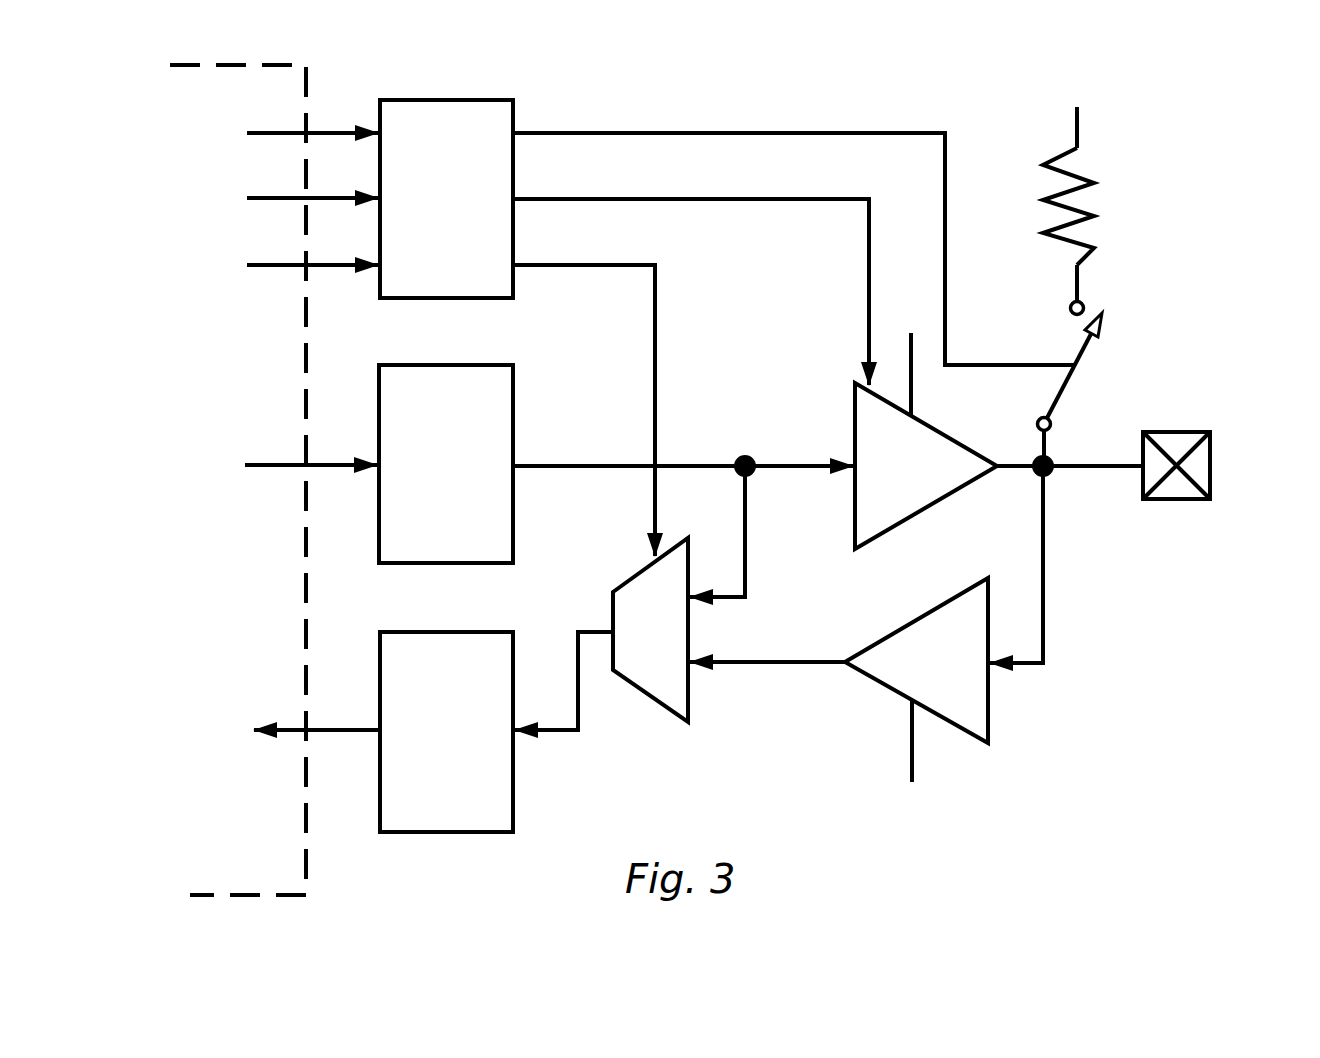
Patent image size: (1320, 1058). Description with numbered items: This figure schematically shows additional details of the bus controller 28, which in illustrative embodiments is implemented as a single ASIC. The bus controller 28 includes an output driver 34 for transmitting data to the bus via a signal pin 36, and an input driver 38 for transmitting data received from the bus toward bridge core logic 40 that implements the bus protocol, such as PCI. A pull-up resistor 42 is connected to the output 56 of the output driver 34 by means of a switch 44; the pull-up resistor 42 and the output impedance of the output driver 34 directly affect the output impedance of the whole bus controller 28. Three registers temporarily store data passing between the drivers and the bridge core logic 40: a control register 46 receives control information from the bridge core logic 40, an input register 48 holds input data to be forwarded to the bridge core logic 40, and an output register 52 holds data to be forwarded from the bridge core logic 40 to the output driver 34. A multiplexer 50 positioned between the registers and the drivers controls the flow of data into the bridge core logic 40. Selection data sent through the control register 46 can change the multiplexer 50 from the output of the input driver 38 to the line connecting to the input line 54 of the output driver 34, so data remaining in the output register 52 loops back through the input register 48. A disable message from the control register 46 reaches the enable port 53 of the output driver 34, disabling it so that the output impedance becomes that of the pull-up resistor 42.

The bus controller 28 is at (1002, 102).
The output driver 34 is at (960, 485).
The signal pin 36 is at (1165, 500).
The input driver 38 is at (932, 608).
The bridge core logic 40 is at (113, 219).
The pull-up resistor 42 is at (1110, 158).
The switch 44 is at (1082, 357).
The control register 46 is at (476, 100).
The input register 48 is at (466, 632).
The multiplexer 50 is at (655, 700).
The output register 52 is at (470, 365).
The enable port 53 is at (856, 375).
The input line 54 is at (800, 431).
The output 56 is at (1020, 452).